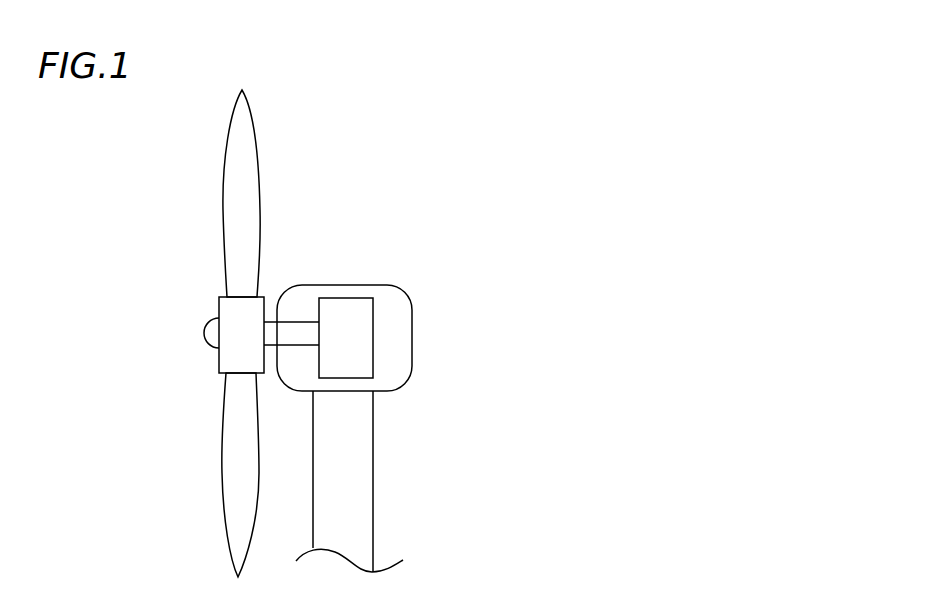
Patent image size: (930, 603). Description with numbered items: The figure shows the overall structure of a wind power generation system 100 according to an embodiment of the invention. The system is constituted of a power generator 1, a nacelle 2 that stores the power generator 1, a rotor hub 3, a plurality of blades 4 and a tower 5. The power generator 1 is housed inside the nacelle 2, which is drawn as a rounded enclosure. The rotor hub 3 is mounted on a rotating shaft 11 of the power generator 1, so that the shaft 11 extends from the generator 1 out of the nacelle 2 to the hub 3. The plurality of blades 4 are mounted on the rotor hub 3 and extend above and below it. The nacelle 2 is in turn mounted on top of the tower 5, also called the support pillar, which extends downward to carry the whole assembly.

The wind power generation system 100 is at (512, 227).
The power generator 1 is at (345, 298).
The nacelle 2 is at (387, 285).
The rotor hub 3 is at (219, 305).
The blades 4 is at (223, 200).
The tower 5 is at (373, 458).
The rotating shaft 11 is at (288, 322).